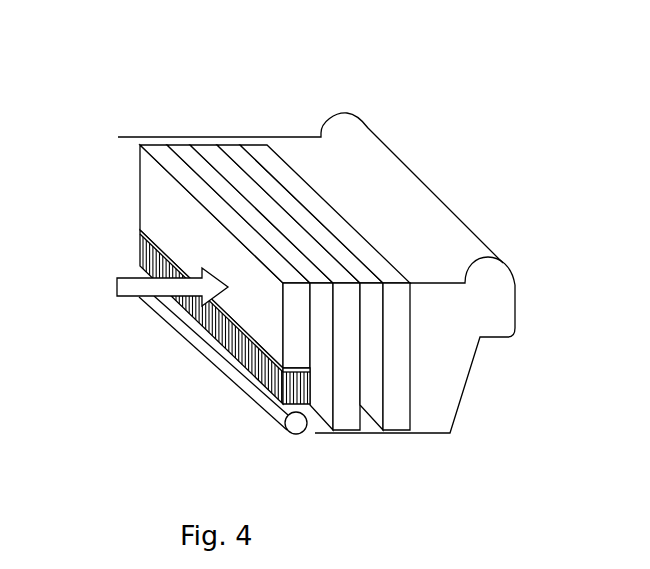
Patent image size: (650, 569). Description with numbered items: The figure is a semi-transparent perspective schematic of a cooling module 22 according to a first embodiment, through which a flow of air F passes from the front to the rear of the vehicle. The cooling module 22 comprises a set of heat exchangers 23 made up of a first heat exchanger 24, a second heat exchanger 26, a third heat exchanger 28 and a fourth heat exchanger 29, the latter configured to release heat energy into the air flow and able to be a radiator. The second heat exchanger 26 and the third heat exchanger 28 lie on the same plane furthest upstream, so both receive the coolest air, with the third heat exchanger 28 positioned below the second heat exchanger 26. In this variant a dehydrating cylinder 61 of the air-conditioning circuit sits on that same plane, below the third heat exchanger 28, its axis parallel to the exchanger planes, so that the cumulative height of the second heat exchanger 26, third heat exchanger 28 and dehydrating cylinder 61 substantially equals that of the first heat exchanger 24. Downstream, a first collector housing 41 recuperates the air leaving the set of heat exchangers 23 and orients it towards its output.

The cooling module 22 is at (442, 156).
The first collector housing 41 is at (462, 224).
The set of heat exchangers 23 is at (205, 112).
The second heat exchanger 26 is at (158, 198).
The first heat exchanger 24 is at (345, 403).
The fourth heat exchanger 29 is at (400, 400).
The dehydrating cylinder 61 is at (227, 375).
The third heat exchanger 28 is at (143, 277).